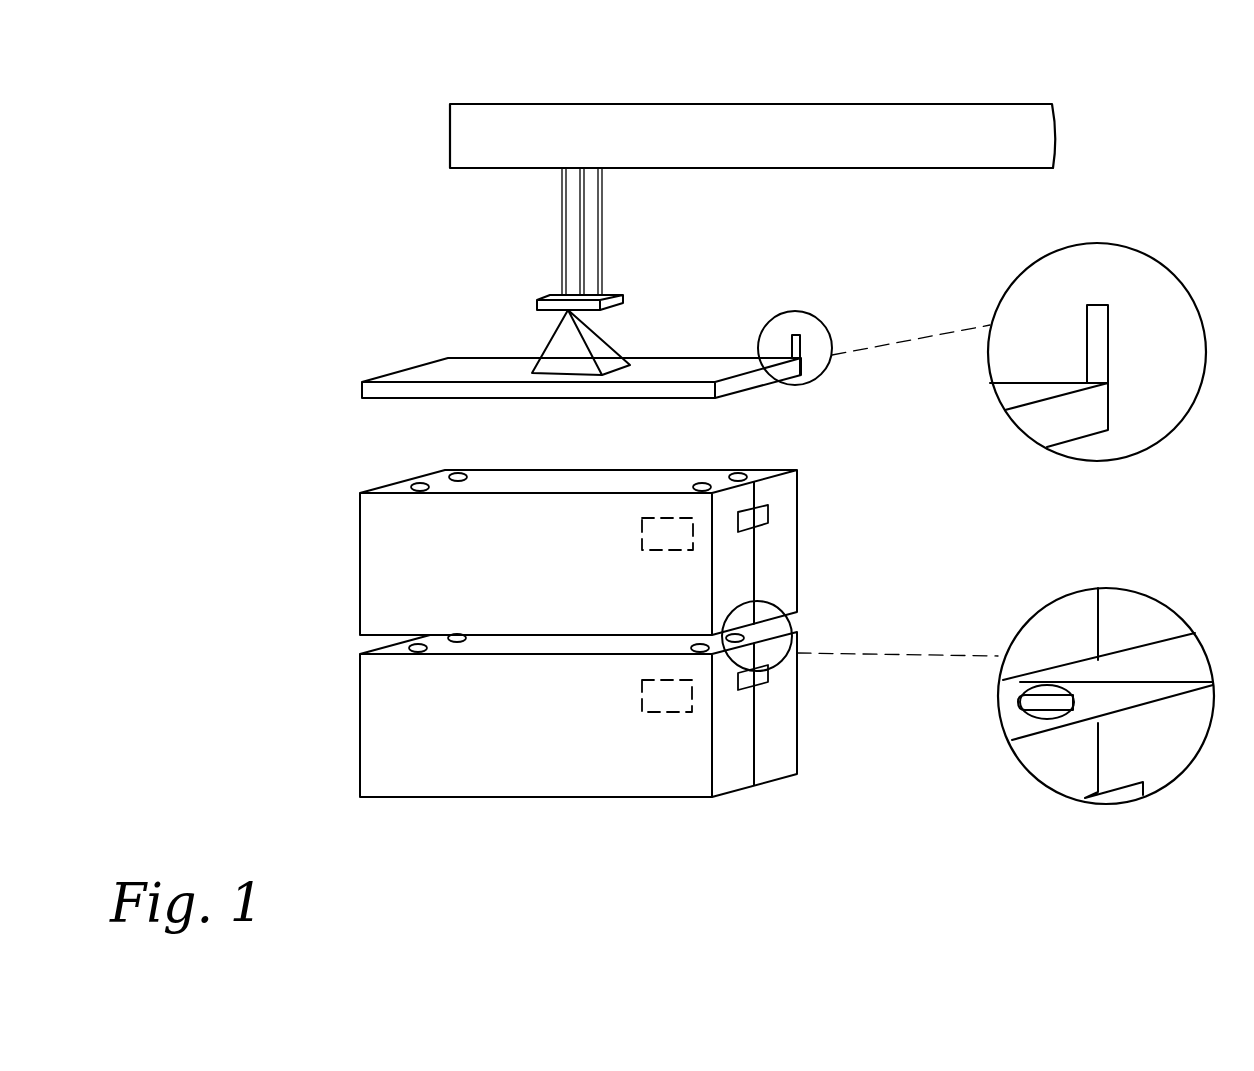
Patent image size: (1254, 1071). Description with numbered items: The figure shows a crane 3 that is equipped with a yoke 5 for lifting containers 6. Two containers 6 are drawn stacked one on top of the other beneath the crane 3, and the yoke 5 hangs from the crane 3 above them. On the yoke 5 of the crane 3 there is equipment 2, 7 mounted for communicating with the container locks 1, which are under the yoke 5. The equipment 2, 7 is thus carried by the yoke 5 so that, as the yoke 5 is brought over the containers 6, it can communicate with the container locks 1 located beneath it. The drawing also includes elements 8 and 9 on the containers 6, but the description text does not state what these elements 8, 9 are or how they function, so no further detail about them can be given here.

The corner fitting of container 1 is at (428, 637).
The spreader plate 2 is at (683, 358).
The crane 3 is at (723, 98).
The lifting hook attachment 5 is at (623, 337).
The containers 6 is at (798, 690).
The antenna 7 is at (828, 312).
The transponder tag 8 is at (780, 507).
The reader unit 9 is at (640, 542).